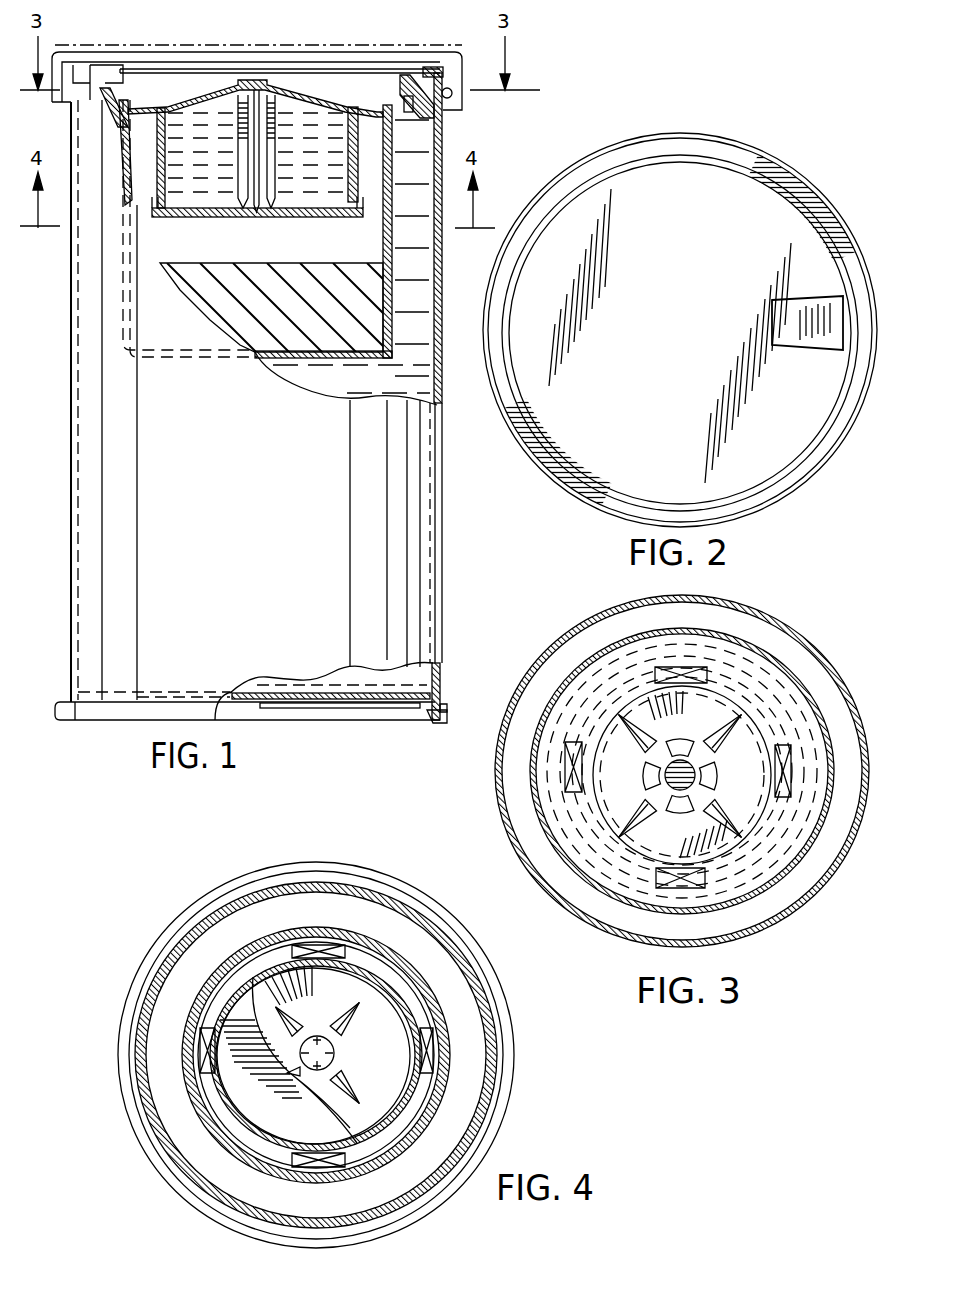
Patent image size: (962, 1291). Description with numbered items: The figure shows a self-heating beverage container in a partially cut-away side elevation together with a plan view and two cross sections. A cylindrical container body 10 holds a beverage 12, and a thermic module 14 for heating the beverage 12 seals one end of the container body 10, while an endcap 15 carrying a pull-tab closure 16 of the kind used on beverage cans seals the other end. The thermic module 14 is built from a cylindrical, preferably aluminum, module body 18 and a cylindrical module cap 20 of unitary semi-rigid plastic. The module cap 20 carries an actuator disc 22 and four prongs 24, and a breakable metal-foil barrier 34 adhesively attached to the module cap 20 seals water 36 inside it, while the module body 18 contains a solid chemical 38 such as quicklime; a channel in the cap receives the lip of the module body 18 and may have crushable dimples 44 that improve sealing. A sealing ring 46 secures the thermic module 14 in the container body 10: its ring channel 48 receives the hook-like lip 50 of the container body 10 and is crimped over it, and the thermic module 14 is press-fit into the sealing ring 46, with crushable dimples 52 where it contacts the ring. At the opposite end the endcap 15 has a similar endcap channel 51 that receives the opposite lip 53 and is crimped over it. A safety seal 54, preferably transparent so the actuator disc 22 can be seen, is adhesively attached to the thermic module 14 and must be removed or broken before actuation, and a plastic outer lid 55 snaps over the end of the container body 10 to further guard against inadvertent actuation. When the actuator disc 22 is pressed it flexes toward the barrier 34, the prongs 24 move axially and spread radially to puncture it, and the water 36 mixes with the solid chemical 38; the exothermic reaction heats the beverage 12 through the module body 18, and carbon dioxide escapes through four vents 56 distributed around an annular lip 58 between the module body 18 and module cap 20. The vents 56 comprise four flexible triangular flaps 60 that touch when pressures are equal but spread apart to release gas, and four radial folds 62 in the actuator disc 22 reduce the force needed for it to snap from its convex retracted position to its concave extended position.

In FIG. 1, the container body 10 is at (70, 343).
In FIG. 3, the container body 10 is at (796, 655).
In FIG. 4, the container body 10 is at (170, 940).
In FIG. 1, the beverage 12 is at (380, 386).
In FIG. 1, the thermic module 14 is at (410, 315).
In FIG. 3, the thermic module 14 is at (778, 884).
In FIG. 1, the endcap 15 is at (252, 703).
In FIG. 1, the pull-tab closure 16 is at (325, 705).
In FIG. 1, the module body 18 is at (393, 223).
In FIG. 4, the module body 18 is at (445, 1085).
In FIG. 1, the module cap 20 is at (157, 180).
In FIG. 3, the module cap 20 is at (795, 812).
In FIG. 4, the module cap 20 is at (370, 970).
In FIG. 1, the actuator disc 22 is at (198, 92).
In FIG. 3, the actuator disc 22 is at (632, 705).
In FIG. 1, the prongs 24 is at (248, 195).
In FIG. 4, the prongs 24 is at (333, 1056).
In FIG. 1, the breakable barrier 34 is at (280, 213).
In FIG. 4, the breakable barrier 34 is at (225, 1080).
In FIG. 1, the water 36 is at (333, 160).
In FIG. 1, the solid chemical 38 is at (325, 273).
In FIG. 1, the crushable dimples 44 is at (133, 125).
In FIG. 1, the sealing ring 46 is at (421, 82).
In FIG. 2, the sealing ring 46 is at (813, 456).
In FIG. 1, the ring channel 48 is at (442, 72).
In FIG. 1, the hook-like lip 50 is at (452, 92).
In FIG. 1, the endcap channel 51 is at (432, 718).
In FIG. 1, the crushable dimples 52 is at (413, 103).
In FIG. 1, the opposite lip 53 is at (445, 712).
In FIG. 1, the safety seal 54 is at (250, 68).
In FIG. 2, the safety seal 54 is at (728, 198).
In FIG. 1, the outer lid 55 is at (292, 50).
In FIG. 3, the vents 56 is at (575, 768).
In FIG. 4, the vents 56 is at (320, 950).
In FIG. 1, the annular lip 58 is at (138, 100).
In FIG. 3, the annular lip 58 is at (568, 812).
In FIG. 4, the annular lip 58 is at (275, 952).
In FIG. 3, the flexible triangular flaps 60 is at (592, 757).
In FIG. 3, the radial folds 62 is at (722, 808).
In FIG. 4, the radial folds 62 is at (370, 1010).